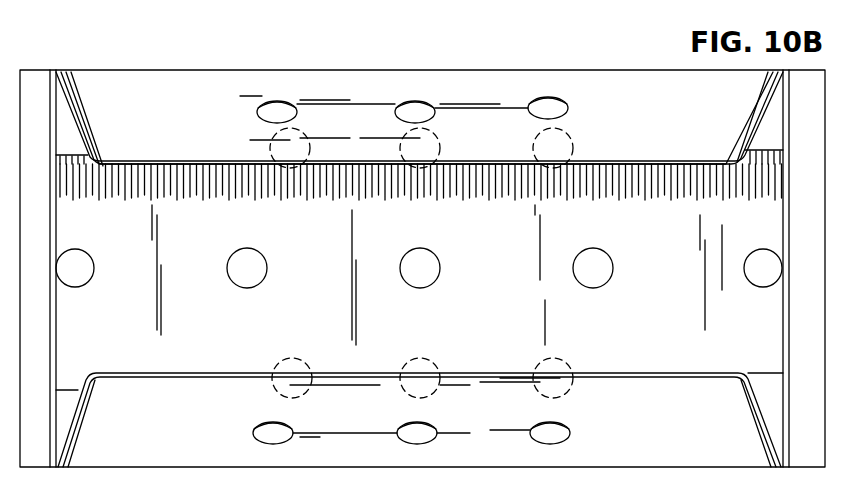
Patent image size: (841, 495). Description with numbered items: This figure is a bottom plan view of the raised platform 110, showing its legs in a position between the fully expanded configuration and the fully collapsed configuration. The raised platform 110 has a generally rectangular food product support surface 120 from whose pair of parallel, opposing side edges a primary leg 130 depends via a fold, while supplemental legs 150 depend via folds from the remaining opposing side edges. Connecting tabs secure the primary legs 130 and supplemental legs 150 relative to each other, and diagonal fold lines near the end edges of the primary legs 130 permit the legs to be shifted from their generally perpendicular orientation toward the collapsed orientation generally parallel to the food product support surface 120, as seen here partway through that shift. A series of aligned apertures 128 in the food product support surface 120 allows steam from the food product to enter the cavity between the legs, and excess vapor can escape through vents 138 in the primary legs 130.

The raised platform 110 is at (600, 48).
The food product support surface 120 is at (128, 165).
The apertures 128 is at (231, 252).
The primary leg 130 is at (331, 80).
The vents 138 is at (266, 104).
The supplemental legs 150 is at (33, 116).